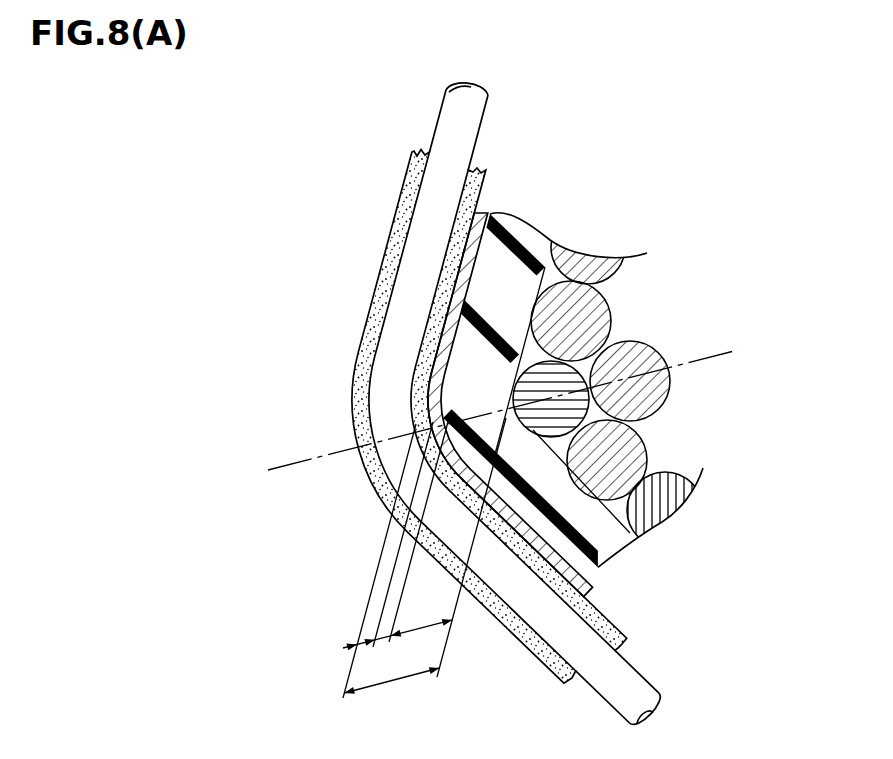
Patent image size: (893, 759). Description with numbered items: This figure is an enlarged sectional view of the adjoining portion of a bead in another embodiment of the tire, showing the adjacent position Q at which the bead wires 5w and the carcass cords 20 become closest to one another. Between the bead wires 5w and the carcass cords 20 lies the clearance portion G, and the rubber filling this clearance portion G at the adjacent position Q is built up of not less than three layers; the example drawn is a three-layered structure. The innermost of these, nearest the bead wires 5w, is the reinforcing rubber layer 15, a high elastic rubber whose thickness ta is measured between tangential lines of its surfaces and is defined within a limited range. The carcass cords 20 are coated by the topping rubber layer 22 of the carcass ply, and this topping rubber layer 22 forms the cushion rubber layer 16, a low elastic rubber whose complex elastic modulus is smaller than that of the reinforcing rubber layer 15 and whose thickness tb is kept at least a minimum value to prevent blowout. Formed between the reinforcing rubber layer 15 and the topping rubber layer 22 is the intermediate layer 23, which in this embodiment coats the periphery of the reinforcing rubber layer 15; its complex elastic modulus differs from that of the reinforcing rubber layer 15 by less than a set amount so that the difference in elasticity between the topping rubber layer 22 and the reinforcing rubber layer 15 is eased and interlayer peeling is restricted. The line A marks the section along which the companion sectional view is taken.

The carcass cords 20 is at (447, 128).
The topping rubber layer 22 is at (412, 417).
The cushion rubber layer 16 is at (400, 206).
The intermediate layer 23 is at (477, 213).
The reinforcing rubber layer 15 is at (534, 228).
The bead wires 5w is at (583, 318).
The adjacent position Q is at (349, 406).
The line A- A is at (502, 412).
The thickness of the reinforcing rubber layer ta is at (415, 630).
The thickness of the cushion rubber layer tb is at (344, 648).
The clearance portion G is at (391, 695).